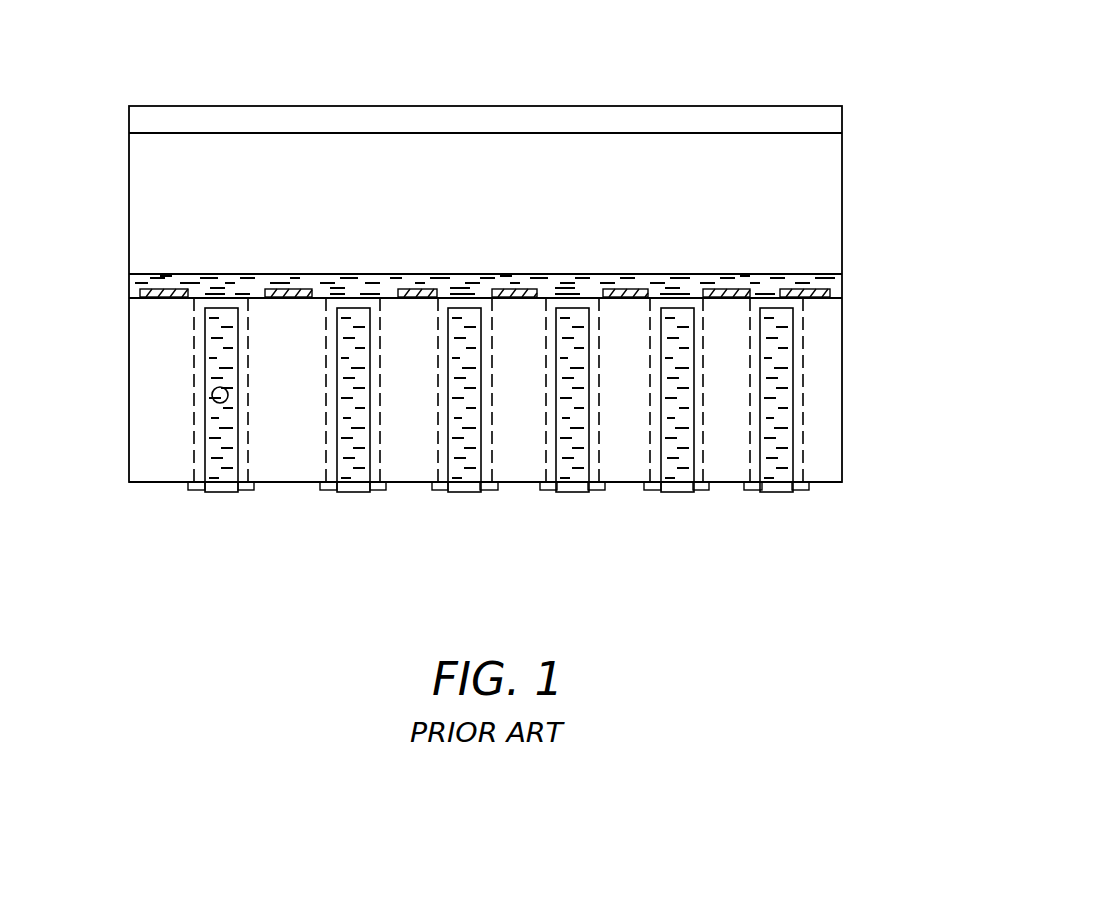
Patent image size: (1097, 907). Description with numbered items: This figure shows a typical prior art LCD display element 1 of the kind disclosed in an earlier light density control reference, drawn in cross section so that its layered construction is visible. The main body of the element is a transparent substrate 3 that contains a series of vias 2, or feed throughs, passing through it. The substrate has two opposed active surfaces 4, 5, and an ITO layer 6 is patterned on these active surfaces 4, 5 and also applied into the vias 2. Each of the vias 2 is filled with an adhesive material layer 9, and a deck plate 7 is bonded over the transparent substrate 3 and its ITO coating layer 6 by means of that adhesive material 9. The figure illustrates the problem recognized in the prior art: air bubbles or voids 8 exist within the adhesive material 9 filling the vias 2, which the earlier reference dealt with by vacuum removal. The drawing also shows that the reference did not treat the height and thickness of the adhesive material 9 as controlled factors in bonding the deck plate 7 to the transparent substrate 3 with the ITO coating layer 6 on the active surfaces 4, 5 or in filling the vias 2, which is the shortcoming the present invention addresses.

The prior art LCD display element 1 is at (622, 62).
The vias 2 is at (248, 468).
The transparent substrate 3 is at (820, 380).
The active surface 4 is at (142, 483).
The active surface 5 is at (447, 293).
The ITO layer 6 is at (140, 292).
The deck plate 7 is at (820, 221).
The voids 8 is at (228, 401).
The adhesive material layer 9 is at (230, 480).